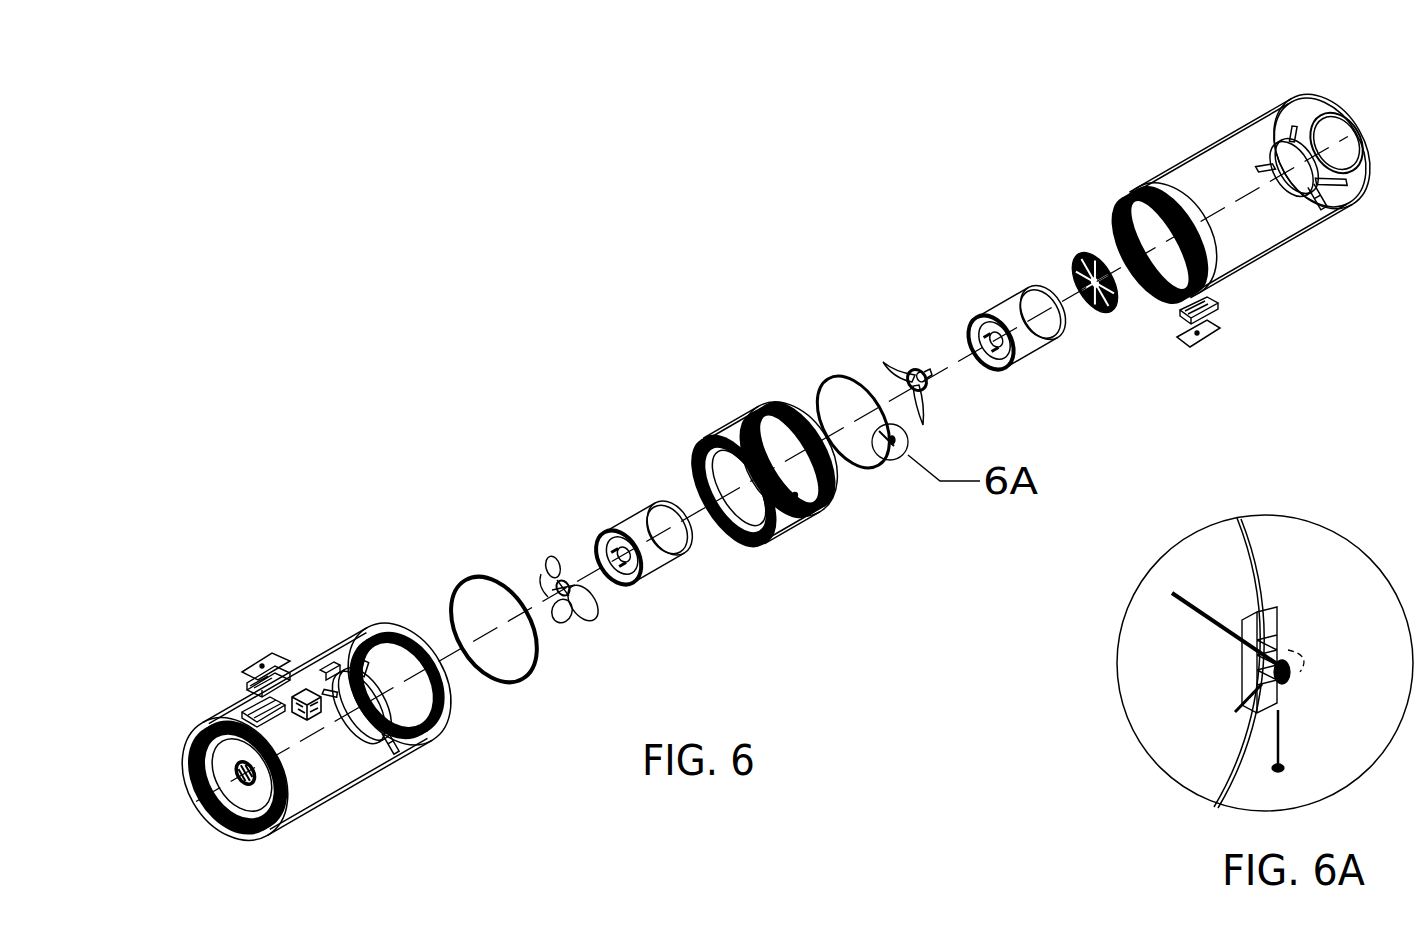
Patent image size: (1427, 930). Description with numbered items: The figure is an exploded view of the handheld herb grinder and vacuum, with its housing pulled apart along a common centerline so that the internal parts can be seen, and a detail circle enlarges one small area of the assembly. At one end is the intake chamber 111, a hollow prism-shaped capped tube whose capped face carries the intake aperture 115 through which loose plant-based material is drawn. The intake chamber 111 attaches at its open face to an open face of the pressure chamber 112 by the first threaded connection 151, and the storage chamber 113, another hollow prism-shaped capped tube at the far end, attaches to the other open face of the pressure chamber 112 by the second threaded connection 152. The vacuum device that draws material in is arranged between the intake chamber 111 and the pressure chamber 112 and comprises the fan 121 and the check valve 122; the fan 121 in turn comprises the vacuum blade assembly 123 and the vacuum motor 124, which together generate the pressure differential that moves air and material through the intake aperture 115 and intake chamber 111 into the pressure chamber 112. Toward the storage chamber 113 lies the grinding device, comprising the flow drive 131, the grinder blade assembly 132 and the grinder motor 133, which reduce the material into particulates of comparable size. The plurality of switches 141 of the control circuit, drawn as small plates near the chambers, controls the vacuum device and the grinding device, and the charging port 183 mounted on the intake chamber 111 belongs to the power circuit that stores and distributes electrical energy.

In FIG. 6, the intake chamber 111 is at (320, 800).
In FIG. 6, the pressure chamber 112 is at (748, 428).
In FIG. 6, the storage chamber 113 is at (1227, 172).
In FIG. 6, the intake aperture 115 is at (222, 800).
In FIG. 6, the fan 121 is at (628, 510).
In FIG. 6, the check valve 122 is at (862, 392).
In FIG. 6A, the check valve 122 is at (1207, 632).
In FIG. 6, the vacuum blade assembly 123 is at (577, 617).
In FIG. 6, the vacuum motor 124 is at (665, 563).
In FIG. 6, the flow drive 131 is at (910, 372).
In FIG. 6, the grinder blade assembly 132 is at (1072, 252).
In FIG. 6, the grinder motor 133 is at (1027, 278).
In FIG. 6, the plurality of switches 141 is at (257, 658).
In FIG. 6, the first threaded connection 151 is at (762, 543).
In FIG. 6, the second threaded connection 152 is at (1135, 192).
In FIG. 6, the charging port 183 is at (310, 690).